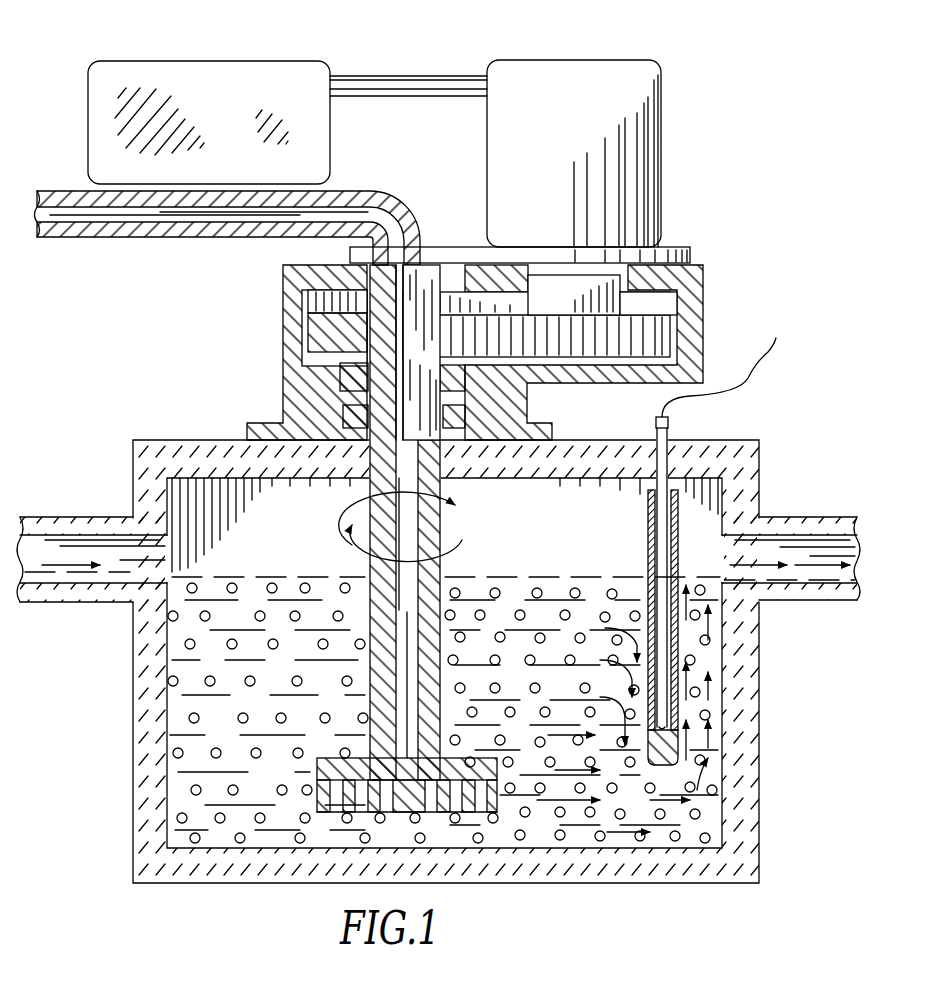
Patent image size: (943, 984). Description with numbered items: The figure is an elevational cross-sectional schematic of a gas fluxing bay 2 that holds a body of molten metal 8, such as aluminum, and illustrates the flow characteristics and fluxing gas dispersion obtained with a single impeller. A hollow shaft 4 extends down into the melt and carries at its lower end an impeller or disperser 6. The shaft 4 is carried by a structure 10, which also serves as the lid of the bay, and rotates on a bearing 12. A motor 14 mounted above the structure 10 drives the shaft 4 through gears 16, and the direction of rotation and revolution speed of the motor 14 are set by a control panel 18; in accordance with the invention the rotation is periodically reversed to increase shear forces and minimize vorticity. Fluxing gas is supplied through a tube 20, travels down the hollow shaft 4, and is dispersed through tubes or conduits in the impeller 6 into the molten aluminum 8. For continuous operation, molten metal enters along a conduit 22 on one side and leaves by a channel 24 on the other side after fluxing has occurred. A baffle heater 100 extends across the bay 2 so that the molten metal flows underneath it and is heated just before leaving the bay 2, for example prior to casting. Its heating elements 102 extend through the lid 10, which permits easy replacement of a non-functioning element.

The gas fluxing bay 2 is at (780, 660).
The hollow shaft 4 is at (452, 566).
The impeller or disperser 6 is at (483, 813).
The body of molten metal 8 is at (180, 712).
The structure (lid) 10 is at (755, 440).
The bearing 12 is at (338, 405).
The motor 14 is at (617, 60).
The gears 16 is at (302, 338).
The control panel 18 is at (227, 61).
The tube 20 is at (158, 237).
The conduit 22 is at (96, 517).
The channel 24 is at (803, 517).
The baffle heater 100 is at (648, 506).
The heating elements 102 is at (668, 434).